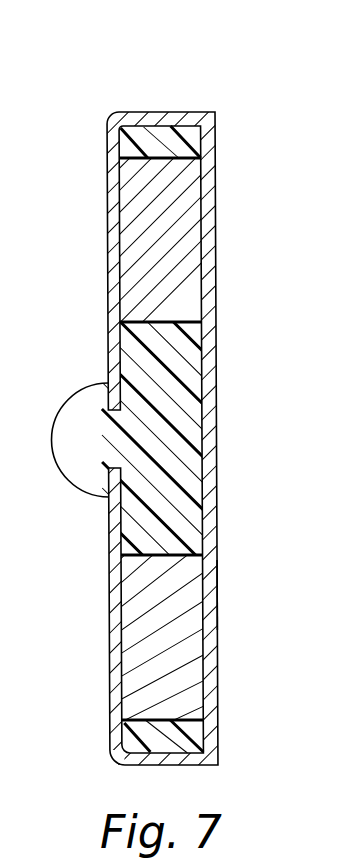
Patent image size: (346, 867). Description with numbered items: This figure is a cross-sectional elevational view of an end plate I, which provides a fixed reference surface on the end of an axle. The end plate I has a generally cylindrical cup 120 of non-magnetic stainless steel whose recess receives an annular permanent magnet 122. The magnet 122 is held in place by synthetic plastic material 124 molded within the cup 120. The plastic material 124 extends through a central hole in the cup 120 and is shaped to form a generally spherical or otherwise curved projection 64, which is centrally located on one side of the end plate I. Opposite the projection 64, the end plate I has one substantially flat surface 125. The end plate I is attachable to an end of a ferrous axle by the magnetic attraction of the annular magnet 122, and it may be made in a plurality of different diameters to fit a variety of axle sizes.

The cup 120 is at (113, 721).
The annular permanent magnet 122 is at (186, 236).
The synthetic plastic material 124 is at (190, 141).
The flat surface 125 is at (217, 593).
The projection 64 is at (63, 474).
The end plate I is at (118, 95).